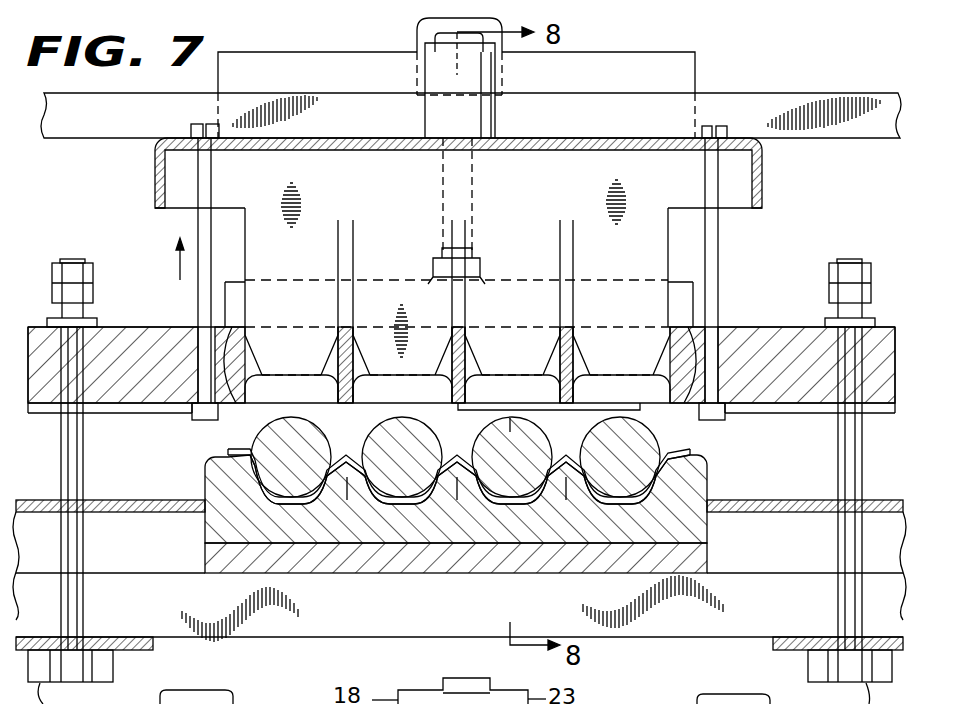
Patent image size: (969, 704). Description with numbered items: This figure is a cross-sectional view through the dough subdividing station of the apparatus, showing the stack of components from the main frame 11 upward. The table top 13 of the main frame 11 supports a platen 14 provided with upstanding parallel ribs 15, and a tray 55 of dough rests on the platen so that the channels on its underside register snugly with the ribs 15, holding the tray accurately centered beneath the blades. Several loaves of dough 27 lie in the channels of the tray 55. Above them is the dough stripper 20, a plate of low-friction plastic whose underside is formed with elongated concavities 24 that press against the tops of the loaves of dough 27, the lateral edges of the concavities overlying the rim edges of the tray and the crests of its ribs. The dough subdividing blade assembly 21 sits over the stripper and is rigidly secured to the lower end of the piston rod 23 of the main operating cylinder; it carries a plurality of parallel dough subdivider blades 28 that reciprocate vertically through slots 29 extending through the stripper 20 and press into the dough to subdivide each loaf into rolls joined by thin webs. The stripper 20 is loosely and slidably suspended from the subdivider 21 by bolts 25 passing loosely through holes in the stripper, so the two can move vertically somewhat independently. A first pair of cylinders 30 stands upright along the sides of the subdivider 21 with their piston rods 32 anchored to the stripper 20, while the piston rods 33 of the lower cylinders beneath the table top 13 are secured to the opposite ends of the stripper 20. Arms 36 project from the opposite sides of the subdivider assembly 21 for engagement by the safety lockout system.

The main frame 11 is at (459, 581).
The table top 13 is at (138, 500).
The platen 14 is at (708, 478).
The upstanding parallel ribs 15 is at (457, 505).
The dough stripper 20 is at (775, 318).
The dough subdividing blade assembly 21 is at (772, 192).
The piston rod 23 is at (443, 42).
The elongated concavities 24 is at (252, 386).
The bolts 25 is at (722, 254).
The loaf of dough 27 is at (330, 423).
The dough subdivider blades 28 is at (300, 267).
The slots 29 is at (243, 343).
The first pair of cylinders 30 is at (420, 26).
The piston rods 32 is at (472, 180).
The piston rods 33 is at (80, 545).
The arms 36 is at (62, 132).
The tray 55 is at (230, 449).